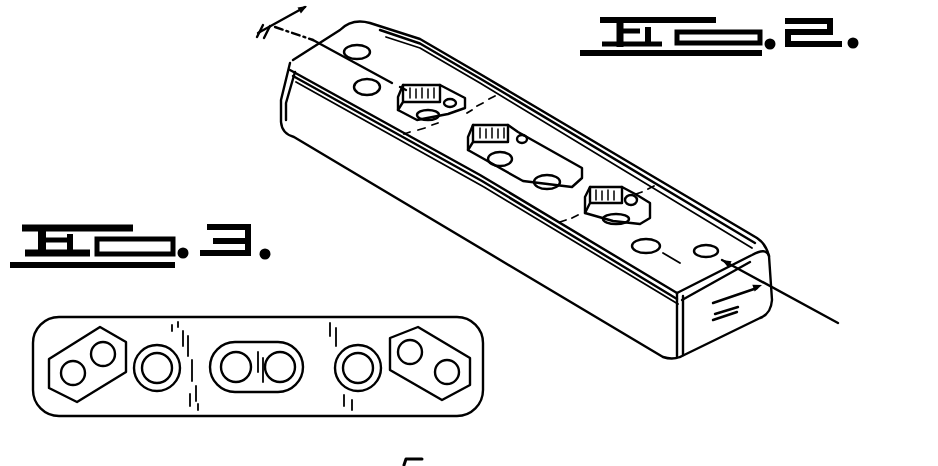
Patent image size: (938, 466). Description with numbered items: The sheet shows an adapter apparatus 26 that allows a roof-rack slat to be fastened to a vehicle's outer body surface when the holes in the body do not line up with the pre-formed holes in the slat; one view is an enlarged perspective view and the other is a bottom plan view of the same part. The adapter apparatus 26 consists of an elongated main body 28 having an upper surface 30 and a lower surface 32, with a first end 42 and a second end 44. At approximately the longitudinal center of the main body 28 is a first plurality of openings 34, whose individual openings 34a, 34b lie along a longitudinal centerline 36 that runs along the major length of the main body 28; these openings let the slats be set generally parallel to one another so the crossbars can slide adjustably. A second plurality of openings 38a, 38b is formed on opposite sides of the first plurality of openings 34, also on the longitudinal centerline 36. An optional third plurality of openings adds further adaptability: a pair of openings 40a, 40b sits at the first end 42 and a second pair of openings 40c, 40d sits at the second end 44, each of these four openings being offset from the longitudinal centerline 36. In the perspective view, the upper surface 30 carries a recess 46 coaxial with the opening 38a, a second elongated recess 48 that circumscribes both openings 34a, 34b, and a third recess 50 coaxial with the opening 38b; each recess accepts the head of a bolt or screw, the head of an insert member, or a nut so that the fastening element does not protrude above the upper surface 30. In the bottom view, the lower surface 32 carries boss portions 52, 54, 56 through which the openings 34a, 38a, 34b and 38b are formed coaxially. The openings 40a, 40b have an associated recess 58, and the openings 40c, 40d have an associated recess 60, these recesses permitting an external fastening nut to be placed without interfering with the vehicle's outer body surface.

In FIG. 2, the adapter apparatus 26 is at (243, 101).
In FIG. 3, the adapter apparatus 26 is at (493, 385).
In FIG. 2, the main body 28 is at (493, 72).
In FIG. 3, the main body 28 is at (468, 417).
In FIG. 2, the upper surface 30 is at (414, 50).
In FIG. 2, the lower surface 32 is at (613, 322).
In FIG. 3, the lower surface 32 is at (55, 403).
In FIG. 2, the first plurality of openings 34 is at (550, 142).
In FIG. 2, the opening 34a is at (498, 160).
In FIG. 3, the opening 34a is at (233, 358).
In FIG. 2, the opening 34b is at (545, 185).
In FIG. 3, the opening 34b is at (278, 360).
In FIG. 2, the longitudinal centerline 36 is at (806, 300).
In FIG. 2, the opening 38a is at (410, 118).
In FIG. 3, the opening 38a is at (160, 378).
In FIG. 2, the opening 38b is at (616, 222).
In FIG. 3, the opening 38b is at (355, 370).
In FIG. 2, the opening 40a is at (360, 47).
In FIG. 3, the opening 40a is at (72, 362).
In FIG. 2, the opening 40b is at (357, 93).
In FIG. 3, the opening 40b is at (107, 350).
In FIG. 2, the opening 40c is at (650, 243).
In FIG. 3, the opening 40c is at (408, 347).
In FIG. 2, the opening 40d is at (706, 247).
In FIG. 3, the opening 40d is at (447, 370).
In FIG. 2, the first end 42 is at (282, 92).
In FIG. 2, the second end 44 is at (704, 336).
In FIG. 2, the recess 46 is at (468, 97).
In FIG. 2, the second elongated recess 48 is at (523, 163).
In FIG. 2, the third recess 50 is at (630, 192).
In FIG. 3, the boss portion 52 is at (147, 388).
In FIG. 3, the boss portion 54 is at (247, 392).
In FIG. 3, the boss portion 56 is at (350, 350).
In FIG. 3, the recess 58 is at (100, 384).
In FIG. 3, the recess 60 is at (422, 377).